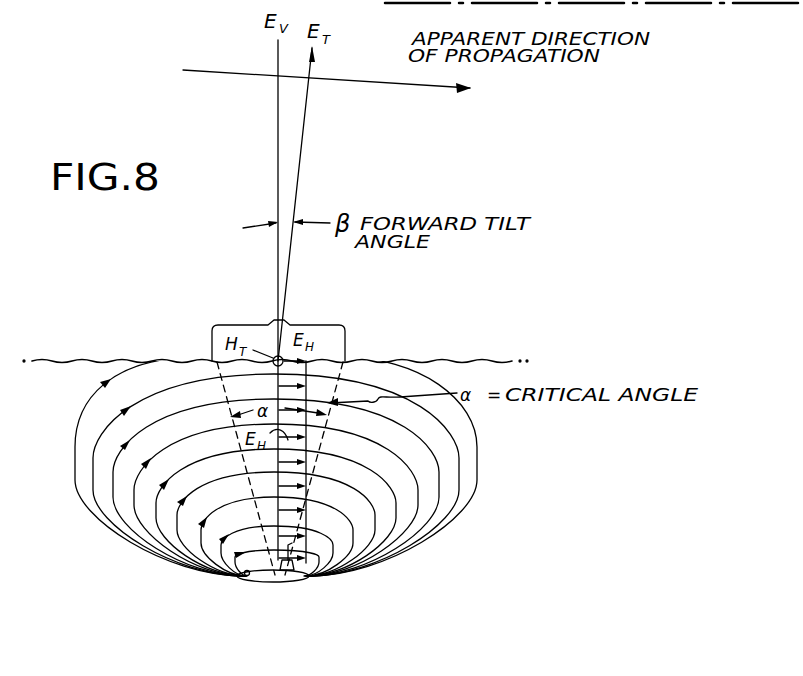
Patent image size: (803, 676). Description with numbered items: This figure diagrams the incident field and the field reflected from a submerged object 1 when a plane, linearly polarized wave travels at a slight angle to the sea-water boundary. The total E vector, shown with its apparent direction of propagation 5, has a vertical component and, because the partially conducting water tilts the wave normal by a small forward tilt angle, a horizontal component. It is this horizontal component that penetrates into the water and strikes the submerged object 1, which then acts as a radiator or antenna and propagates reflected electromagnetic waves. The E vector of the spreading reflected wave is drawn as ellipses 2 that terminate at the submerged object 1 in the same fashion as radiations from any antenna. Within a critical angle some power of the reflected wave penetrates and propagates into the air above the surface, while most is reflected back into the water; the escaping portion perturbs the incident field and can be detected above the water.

The submerged object 1 is at (283, 580).
The ellipses 2 is at (478, 500).
The apparent direction of propagation 5 is at (327, 75).